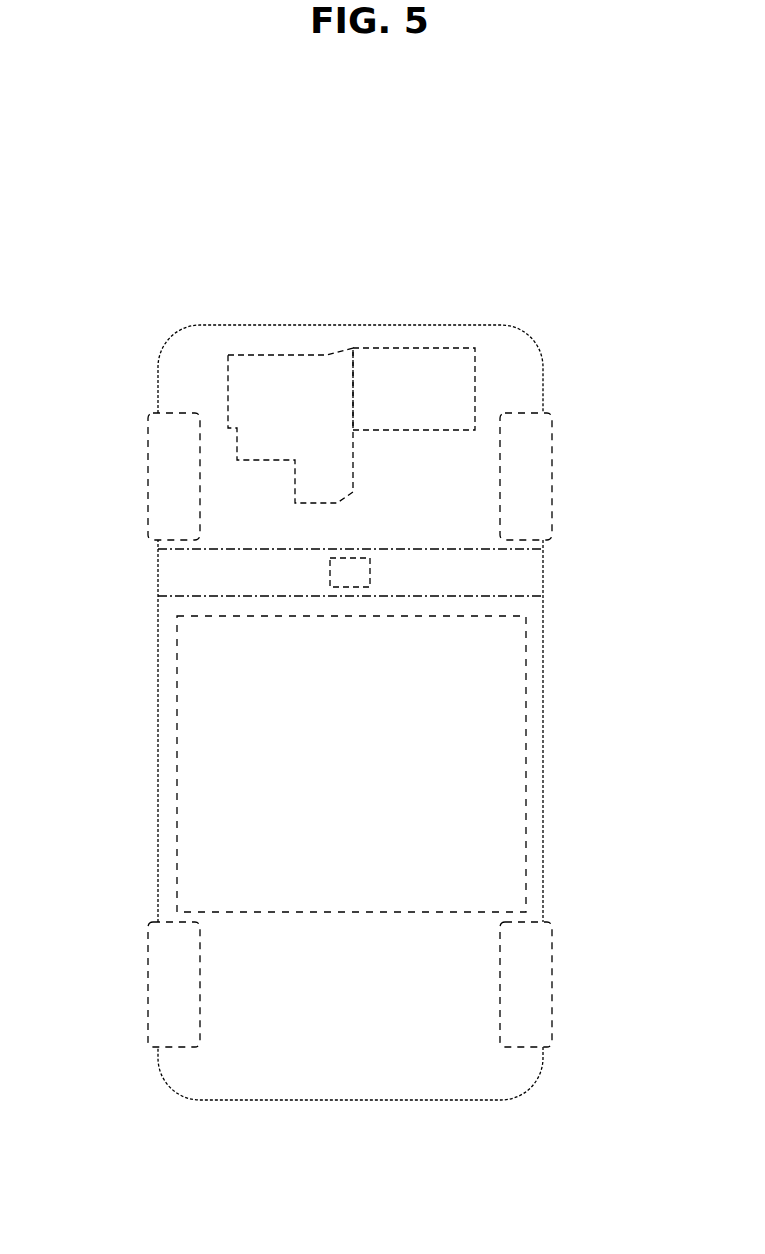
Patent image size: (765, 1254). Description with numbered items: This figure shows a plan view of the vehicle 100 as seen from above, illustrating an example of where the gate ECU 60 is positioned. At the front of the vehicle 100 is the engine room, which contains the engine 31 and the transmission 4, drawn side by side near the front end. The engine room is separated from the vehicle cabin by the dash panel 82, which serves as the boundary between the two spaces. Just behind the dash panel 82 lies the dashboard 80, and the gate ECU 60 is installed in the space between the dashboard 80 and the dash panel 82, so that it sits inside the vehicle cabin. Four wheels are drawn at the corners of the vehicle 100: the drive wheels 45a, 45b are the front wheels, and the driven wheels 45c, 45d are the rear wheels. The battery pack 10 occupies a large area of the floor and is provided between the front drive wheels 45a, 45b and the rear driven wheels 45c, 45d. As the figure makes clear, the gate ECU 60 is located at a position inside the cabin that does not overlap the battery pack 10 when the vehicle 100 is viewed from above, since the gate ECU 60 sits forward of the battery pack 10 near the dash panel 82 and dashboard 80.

The vehicle 100 is at (514, 252).
The battery pack 10 is at (527, 750).
The transmission 4 is at (283, 377).
The engine 31 is at (418, 377).
The drive wheel 45a is at (148, 470).
The drive wheel 45b is at (553, 479).
The driven wheel 45c is at (150, 986).
The driven wheel 45d is at (553, 988).
The gate ECU 60 is at (371, 566).
The dashboard 80 is at (299, 540).
The dash panel 82 is at (432, 547).